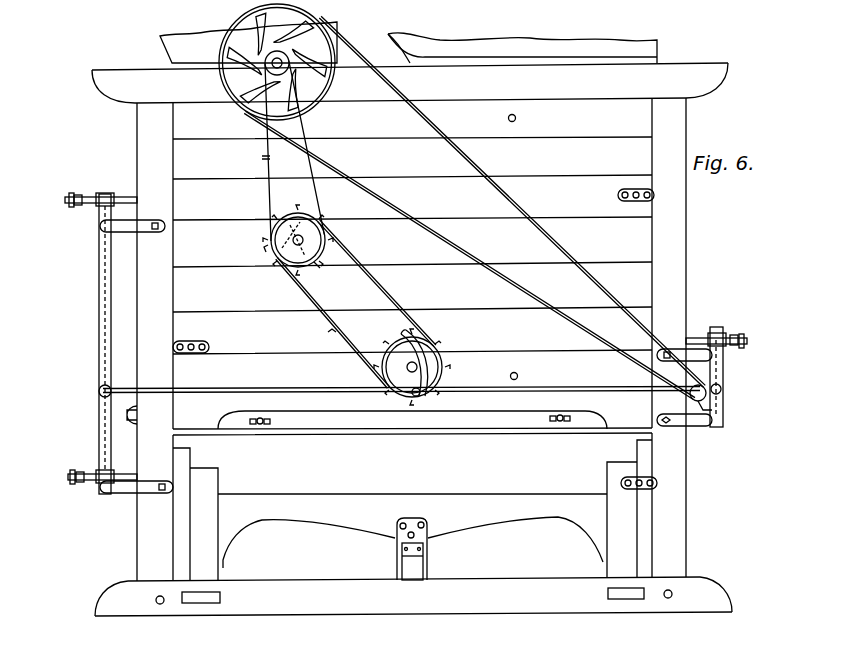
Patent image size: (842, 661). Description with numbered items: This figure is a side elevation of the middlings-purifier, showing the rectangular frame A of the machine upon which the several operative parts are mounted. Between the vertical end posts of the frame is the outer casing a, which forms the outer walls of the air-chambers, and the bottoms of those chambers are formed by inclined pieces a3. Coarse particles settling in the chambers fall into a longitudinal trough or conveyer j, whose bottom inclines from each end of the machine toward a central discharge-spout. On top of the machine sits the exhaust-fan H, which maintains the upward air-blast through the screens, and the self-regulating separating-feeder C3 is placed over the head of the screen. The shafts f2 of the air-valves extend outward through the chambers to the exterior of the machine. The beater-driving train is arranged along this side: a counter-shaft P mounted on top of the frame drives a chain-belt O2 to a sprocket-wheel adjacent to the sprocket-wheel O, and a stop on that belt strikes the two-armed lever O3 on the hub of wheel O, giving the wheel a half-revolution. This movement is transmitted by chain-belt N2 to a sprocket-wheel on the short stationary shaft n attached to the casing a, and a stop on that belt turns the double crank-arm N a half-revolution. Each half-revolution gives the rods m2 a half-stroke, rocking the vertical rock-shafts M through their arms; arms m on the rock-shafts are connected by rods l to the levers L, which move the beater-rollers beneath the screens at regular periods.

The rectangular frame A is at (412, 339).
The outer casing a is at (412, 245).
The self-regulating separating-feeder C3 is at (248, 42).
The exhaust-fan H is at (522, 40).
The counter-shaft P is at (277, 75).
The chain-belt O2 is at (273, 190).
The sprocket-wheel O is at (324, 240).
The lever O3 is at (330, 272).
The valve shafts f2 is at (509, 118).
The chain-belt N2 is at (326, 312).
The double crank-arm N is at (444, 370).
The stationary shaft n is at (418, 364).
The rods m2 is at (401, 382).
The vertical rock-shafts M is at (99, 364).
The lever L is at (406, 331).
The rods l is at (67, 199).
The arms m is at (80, 208).
The inclined bottom pieces a3 is at (412, 438).
The trough or conveyer j is at (413, 550).